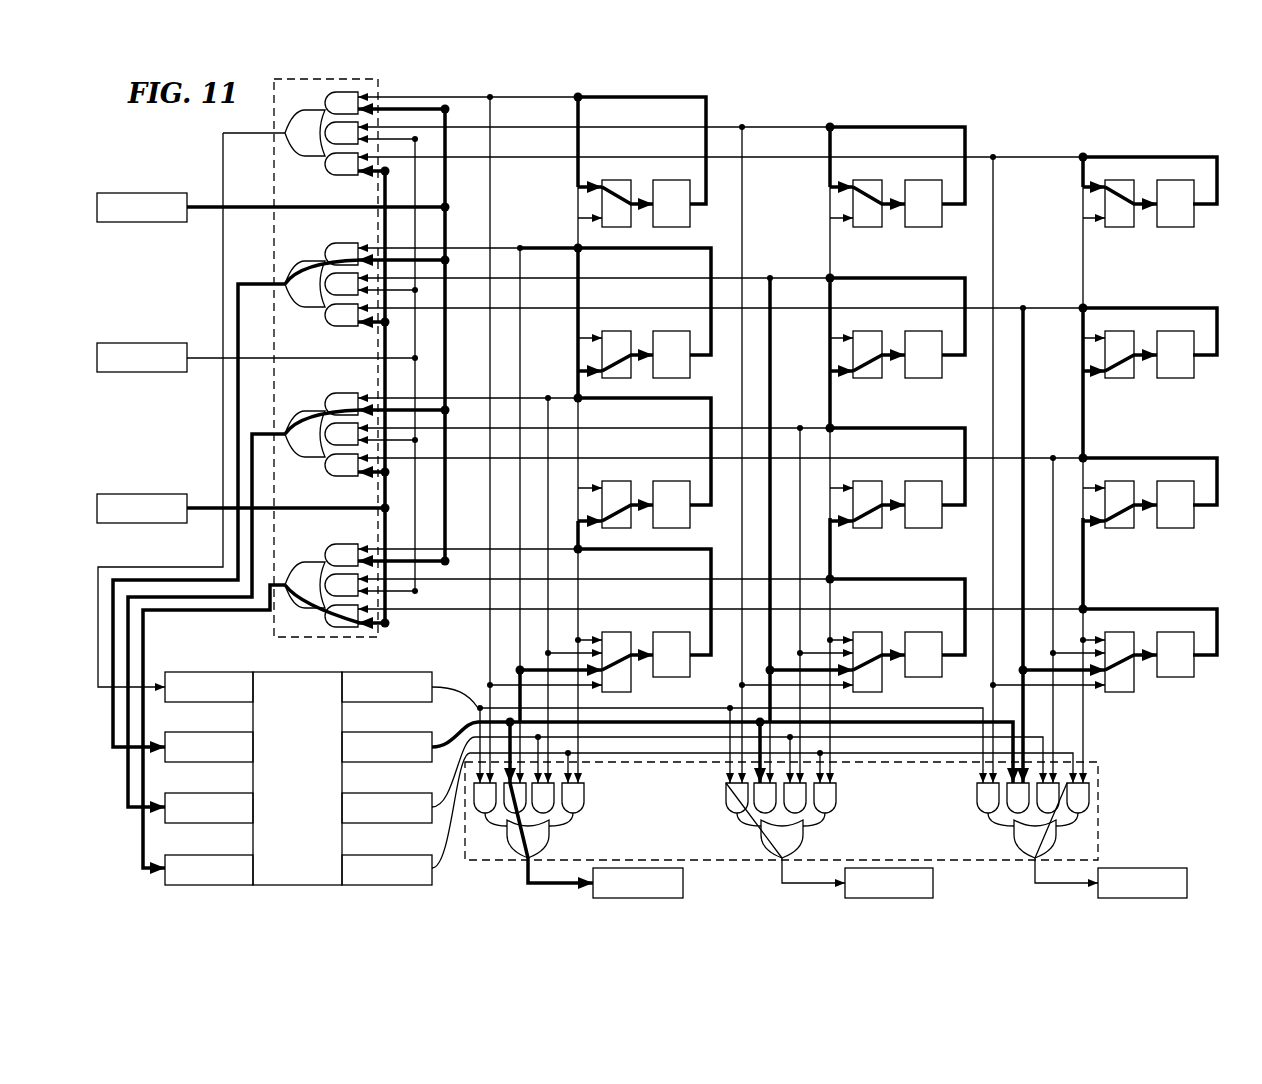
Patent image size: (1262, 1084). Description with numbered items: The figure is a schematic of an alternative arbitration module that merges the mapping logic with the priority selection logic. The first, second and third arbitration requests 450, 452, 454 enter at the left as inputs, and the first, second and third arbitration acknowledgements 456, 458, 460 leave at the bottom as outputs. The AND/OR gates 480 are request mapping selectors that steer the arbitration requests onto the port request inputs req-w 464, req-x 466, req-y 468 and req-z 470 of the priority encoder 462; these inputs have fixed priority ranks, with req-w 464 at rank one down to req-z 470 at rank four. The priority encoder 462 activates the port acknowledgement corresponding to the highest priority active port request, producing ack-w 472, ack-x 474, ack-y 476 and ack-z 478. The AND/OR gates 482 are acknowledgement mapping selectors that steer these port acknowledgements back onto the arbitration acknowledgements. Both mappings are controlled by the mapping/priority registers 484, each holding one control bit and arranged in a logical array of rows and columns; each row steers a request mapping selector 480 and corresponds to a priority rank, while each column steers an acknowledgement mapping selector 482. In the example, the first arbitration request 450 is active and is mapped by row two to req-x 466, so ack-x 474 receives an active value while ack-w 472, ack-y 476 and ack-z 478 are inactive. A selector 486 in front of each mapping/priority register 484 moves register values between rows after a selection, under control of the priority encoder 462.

The arbitration request req-1 450 is at (105, 193).
The arbitration request req-2 452 is at (105, 343).
The arbitration request req-3 454 is at (105, 494).
The arbitration acknowledgement ack-1 456 is at (683, 873).
The arbitration acknowledgement ack-2 458 is at (933, 873).
The arbitration acknowledgement ack-3 460 is at (1113, 867).
The priority encoder 462 is at (271, 668).
The port request input req-w 464 is at (183, 668).
The port request input req-x 466 is at (183, 729).
The port request input req-y 468 is at (183, 789).
The port request input req-z 470 is at (183, 851).
The port acknowledgement ack-w 472 is at (360, 668).
The port acknowledgement ack-x 474 is at (360, 729).
The port acknowledgement ack-y 476 is at (360, 789).
The port acknowledgement ack-z 478 is at (360, 851).
The request mapping selectors 480 is at (274, 92).
The acknowledgement mapping selectors 482 is at (1098, 813).
The mapping/priority registers 484 is at (665, 227).
The selector 486 is at (605, 227).